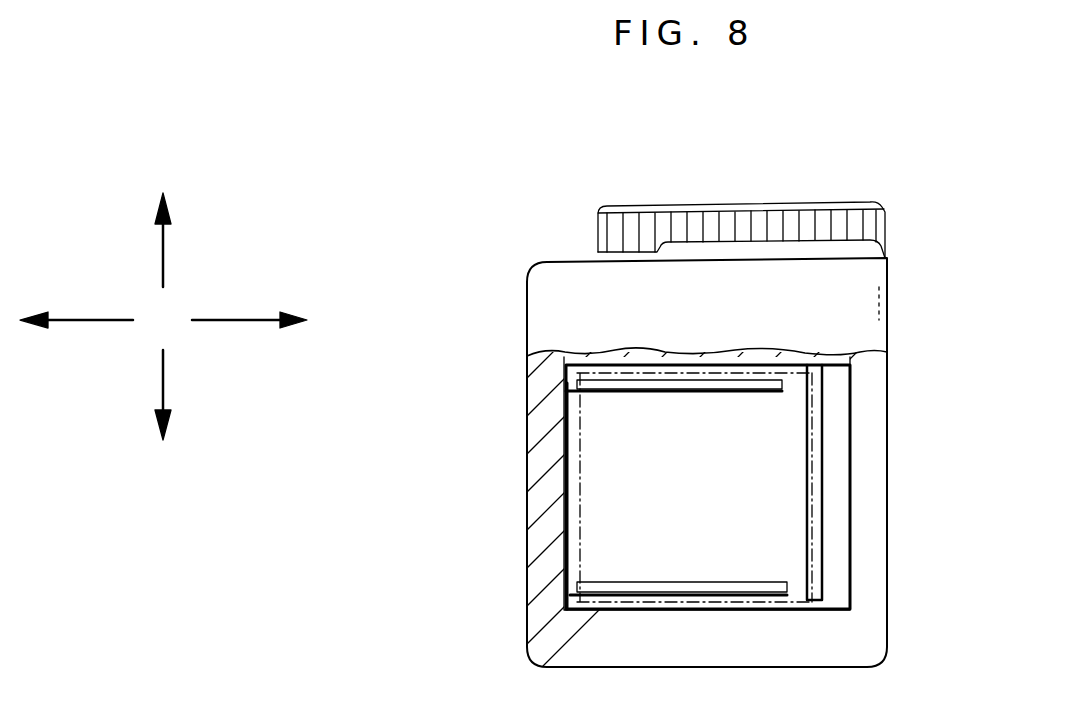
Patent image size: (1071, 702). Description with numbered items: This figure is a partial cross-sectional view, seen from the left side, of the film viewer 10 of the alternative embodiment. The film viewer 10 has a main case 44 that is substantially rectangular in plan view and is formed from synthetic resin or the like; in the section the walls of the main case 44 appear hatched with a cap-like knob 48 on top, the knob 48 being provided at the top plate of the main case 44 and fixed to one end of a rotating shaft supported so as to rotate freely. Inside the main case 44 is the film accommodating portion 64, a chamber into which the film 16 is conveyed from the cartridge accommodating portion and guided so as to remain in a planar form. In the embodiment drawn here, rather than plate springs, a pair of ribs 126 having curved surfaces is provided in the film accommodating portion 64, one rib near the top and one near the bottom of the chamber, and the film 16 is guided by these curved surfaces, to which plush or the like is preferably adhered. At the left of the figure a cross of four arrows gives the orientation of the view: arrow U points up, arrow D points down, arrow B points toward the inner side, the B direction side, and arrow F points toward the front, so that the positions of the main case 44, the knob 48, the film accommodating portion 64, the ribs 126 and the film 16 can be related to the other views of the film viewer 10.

The film viewer 10 is at (518, 193).
The knob 48 is at (598, 232).
The main case 44 is at (528, 283).
The film 16 is at (621, 487).
The film accommodating portion 64 is at (567, 541).
The ribs 126 is at (645, 583).
The up direction U is at (164, 263).
The down direction D is at (165, 385).
The direction B is at (78, 323).
The front direction F is at (232, 322).